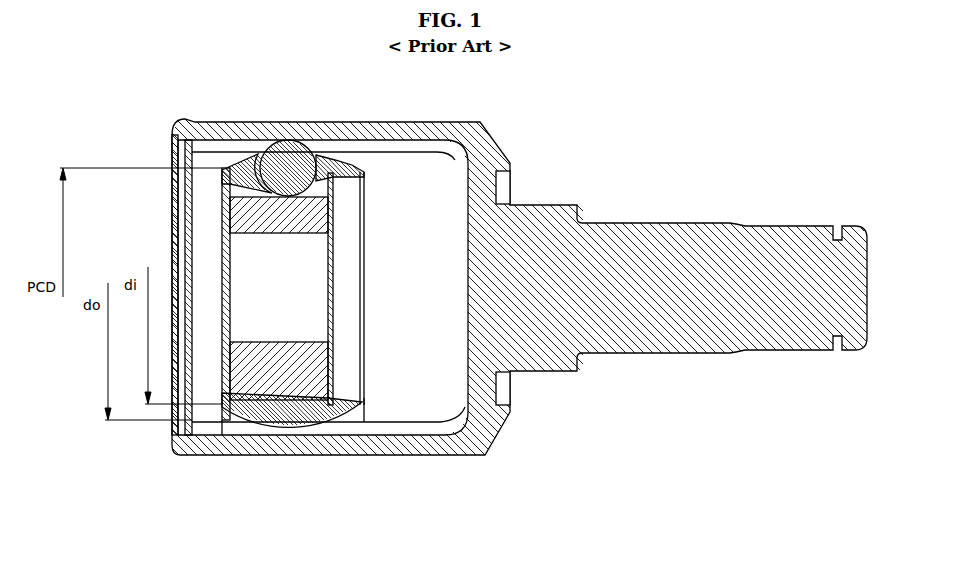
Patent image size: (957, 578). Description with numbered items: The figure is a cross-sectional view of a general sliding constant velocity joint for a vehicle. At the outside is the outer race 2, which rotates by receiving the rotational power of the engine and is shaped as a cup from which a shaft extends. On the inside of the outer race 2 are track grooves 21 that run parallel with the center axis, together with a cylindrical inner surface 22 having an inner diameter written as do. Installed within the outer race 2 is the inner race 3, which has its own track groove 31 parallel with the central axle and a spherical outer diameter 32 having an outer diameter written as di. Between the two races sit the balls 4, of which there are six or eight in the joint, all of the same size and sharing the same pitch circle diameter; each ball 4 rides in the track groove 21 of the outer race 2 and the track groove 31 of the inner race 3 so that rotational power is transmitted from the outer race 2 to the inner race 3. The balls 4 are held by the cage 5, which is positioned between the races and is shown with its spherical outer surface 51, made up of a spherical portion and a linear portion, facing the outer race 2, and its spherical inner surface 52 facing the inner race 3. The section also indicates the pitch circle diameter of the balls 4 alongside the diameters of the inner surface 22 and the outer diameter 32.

The outer race 2 is at (440, 114).
The track groove 21 is at (226, 198).
The inner surface 22 is at (437, 160).
The inner race 3 is at (332, 220).
The track groove 31 is at (333, 156).
The outer diameter 32 is at (178, 170).
The ball 4 is at (287, 140).
The cage 5 is at (271, 424).
The spherical outer surface 51 is at (229, 432).
The spherical inner surface 52 is at (303, 428).